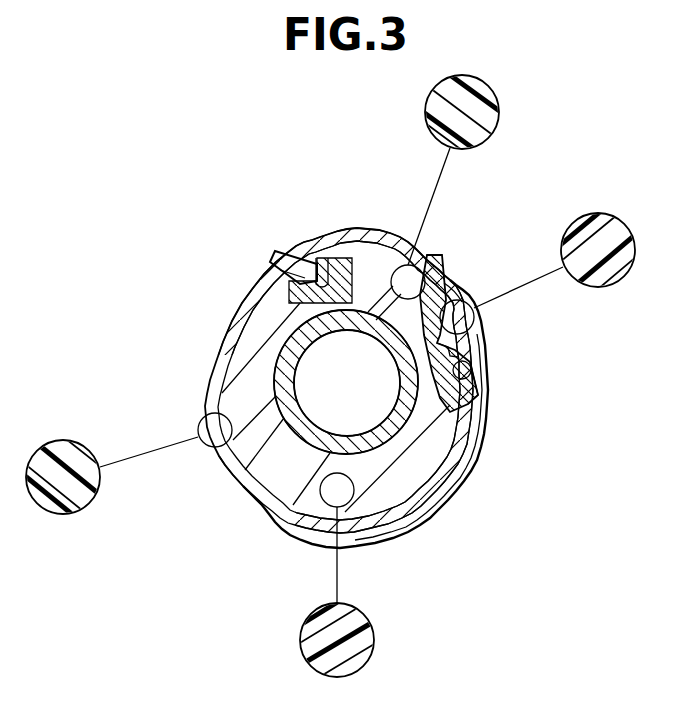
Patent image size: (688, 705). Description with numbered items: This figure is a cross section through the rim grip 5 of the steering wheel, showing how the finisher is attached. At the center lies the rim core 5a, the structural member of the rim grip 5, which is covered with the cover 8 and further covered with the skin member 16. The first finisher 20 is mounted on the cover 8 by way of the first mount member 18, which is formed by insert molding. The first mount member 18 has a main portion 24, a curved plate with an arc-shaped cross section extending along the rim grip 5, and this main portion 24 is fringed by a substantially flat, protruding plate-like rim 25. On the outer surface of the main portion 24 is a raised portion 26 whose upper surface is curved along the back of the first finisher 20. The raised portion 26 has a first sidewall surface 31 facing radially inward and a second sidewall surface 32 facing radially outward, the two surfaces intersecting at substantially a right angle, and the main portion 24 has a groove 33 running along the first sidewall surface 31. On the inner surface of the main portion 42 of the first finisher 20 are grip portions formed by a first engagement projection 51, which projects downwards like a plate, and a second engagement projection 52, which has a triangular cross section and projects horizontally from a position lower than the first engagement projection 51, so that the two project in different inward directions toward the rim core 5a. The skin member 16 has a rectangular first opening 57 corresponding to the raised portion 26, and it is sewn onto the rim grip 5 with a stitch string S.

The rim grip 5 is at (188, 236).
The rim core 5a is at (262, 515).
The cover 8 is at (248, 447).
The skin member 16 is at (211, 376).
The first mount member 18 is at (469, 463).
The first finisher 20 is at (428, 258).
The main portion 24 is at (471, 373).
The rim 25 is at (478, 400).
The raised portion 26 is at (395, 266).
The first sidewall surface 31 is at (292, 283).
The second sidewall surface 32 is at (452, 340).
The groove 33 is at (320, 315).
The main portion 42 is at (443, 281).
The first engagement projection 51 is at (333, 277).
The second engagement projection 52 is at (443, 355).
The first opening 57 is at (322, 258).
The stitch string S is at (203, 416).